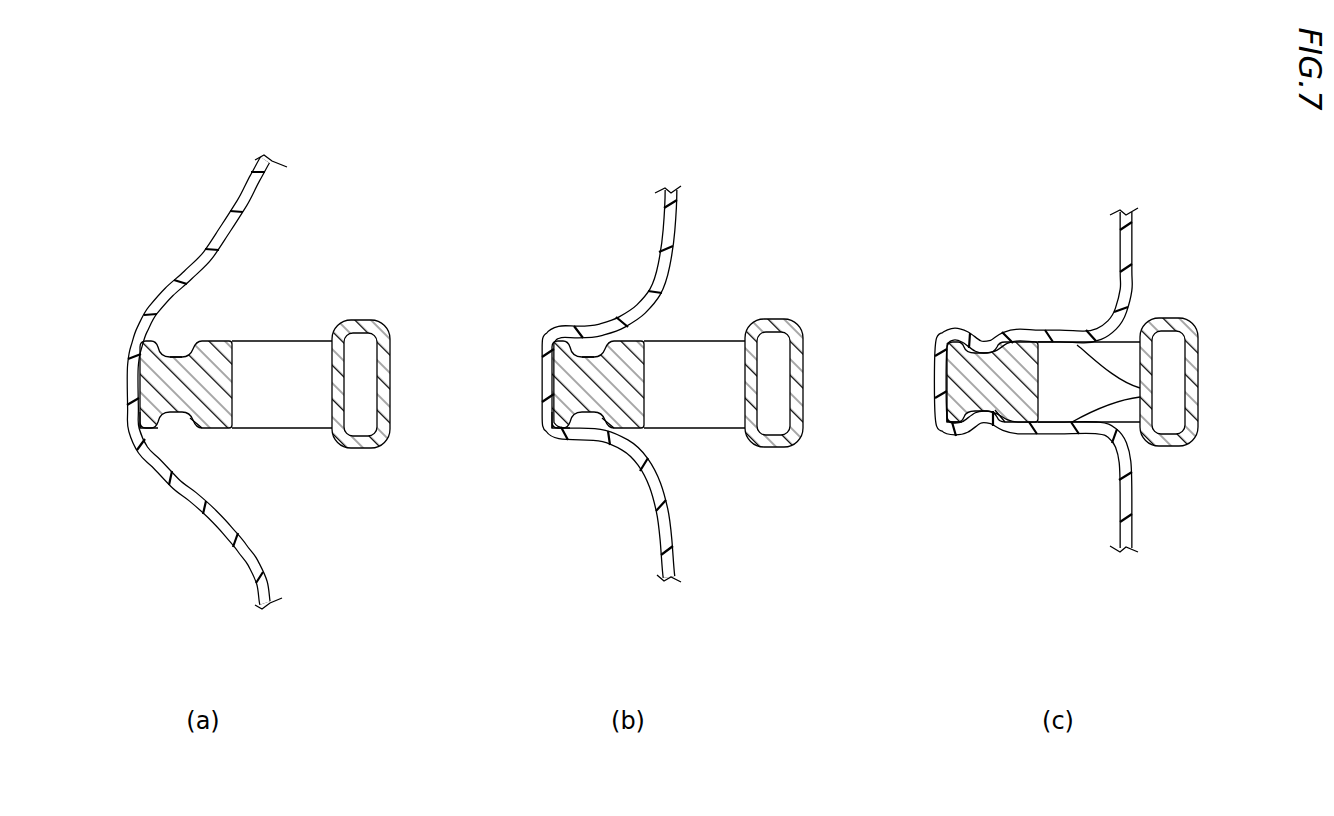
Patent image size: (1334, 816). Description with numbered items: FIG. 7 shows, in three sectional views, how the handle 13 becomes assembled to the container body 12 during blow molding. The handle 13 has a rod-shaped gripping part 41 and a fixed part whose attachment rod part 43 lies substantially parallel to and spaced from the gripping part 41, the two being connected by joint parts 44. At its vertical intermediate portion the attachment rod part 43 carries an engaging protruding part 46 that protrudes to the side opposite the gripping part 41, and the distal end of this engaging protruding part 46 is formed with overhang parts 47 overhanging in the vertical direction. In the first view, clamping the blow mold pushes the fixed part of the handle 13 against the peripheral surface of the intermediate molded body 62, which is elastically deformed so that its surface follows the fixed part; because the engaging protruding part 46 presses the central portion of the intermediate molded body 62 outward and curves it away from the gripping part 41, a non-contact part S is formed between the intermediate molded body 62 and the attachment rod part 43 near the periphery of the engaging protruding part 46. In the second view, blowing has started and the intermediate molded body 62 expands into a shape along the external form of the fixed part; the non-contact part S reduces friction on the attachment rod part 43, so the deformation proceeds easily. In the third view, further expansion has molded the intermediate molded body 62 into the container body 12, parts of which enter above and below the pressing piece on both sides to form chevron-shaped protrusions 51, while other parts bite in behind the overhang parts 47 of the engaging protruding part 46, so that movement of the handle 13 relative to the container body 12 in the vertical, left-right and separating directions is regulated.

The container body 12 is at (1133, 527).
The handle 13 is at (659, 384).
The gripping part 41 is at (388, 360).
The attachment rod part 43 is at (208, 418).
The joint part 44 is at (285, 353).
The engaging protruding part 46 is at (548, 443).
The overhang part 47 is at (150, 418).
The chevron-shaped protrusion 51 is at (1140, 390).
The intermediate molded body 62 is at (257, 562).
The non-contact part S is at (173, 354).